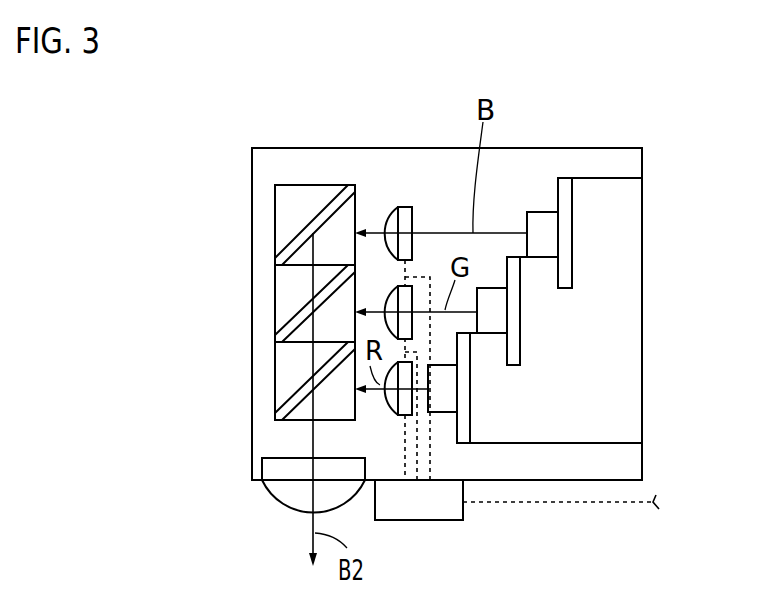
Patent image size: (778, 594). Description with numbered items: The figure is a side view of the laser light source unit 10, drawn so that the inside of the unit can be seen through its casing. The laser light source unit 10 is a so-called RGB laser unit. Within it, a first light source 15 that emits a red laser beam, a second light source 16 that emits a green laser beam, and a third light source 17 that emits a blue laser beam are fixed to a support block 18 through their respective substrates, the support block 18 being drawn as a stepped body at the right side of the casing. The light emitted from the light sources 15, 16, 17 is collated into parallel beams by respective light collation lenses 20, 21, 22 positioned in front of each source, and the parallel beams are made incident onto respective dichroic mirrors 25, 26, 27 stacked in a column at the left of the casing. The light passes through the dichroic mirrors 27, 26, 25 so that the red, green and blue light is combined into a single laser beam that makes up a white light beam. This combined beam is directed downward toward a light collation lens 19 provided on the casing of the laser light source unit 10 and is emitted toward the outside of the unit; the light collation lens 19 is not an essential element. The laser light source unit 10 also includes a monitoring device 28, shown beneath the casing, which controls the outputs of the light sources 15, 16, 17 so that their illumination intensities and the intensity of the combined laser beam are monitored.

The laser light source unit 10 is at (289, 143).
The first light source 15 is at (440, 366).
The second light source 16 is at (493, 288).
The third light source 17 is at (540, 212).
The support block 18 is at (628, 199).
The light collation lens 19 is at (288, 498).
The light collation lens 20 is at (390, 401).
The light collation lens 21 is at (388, 298).
The light collation lens 22 is at (388, 213).
The dichroic mirror 25 is at (293, 389).
The dichroic mirror 26 is at (297, 313).
The dichroic mirror 27 is at (298, 240).
The monitoring device 28 is at (432, 517).